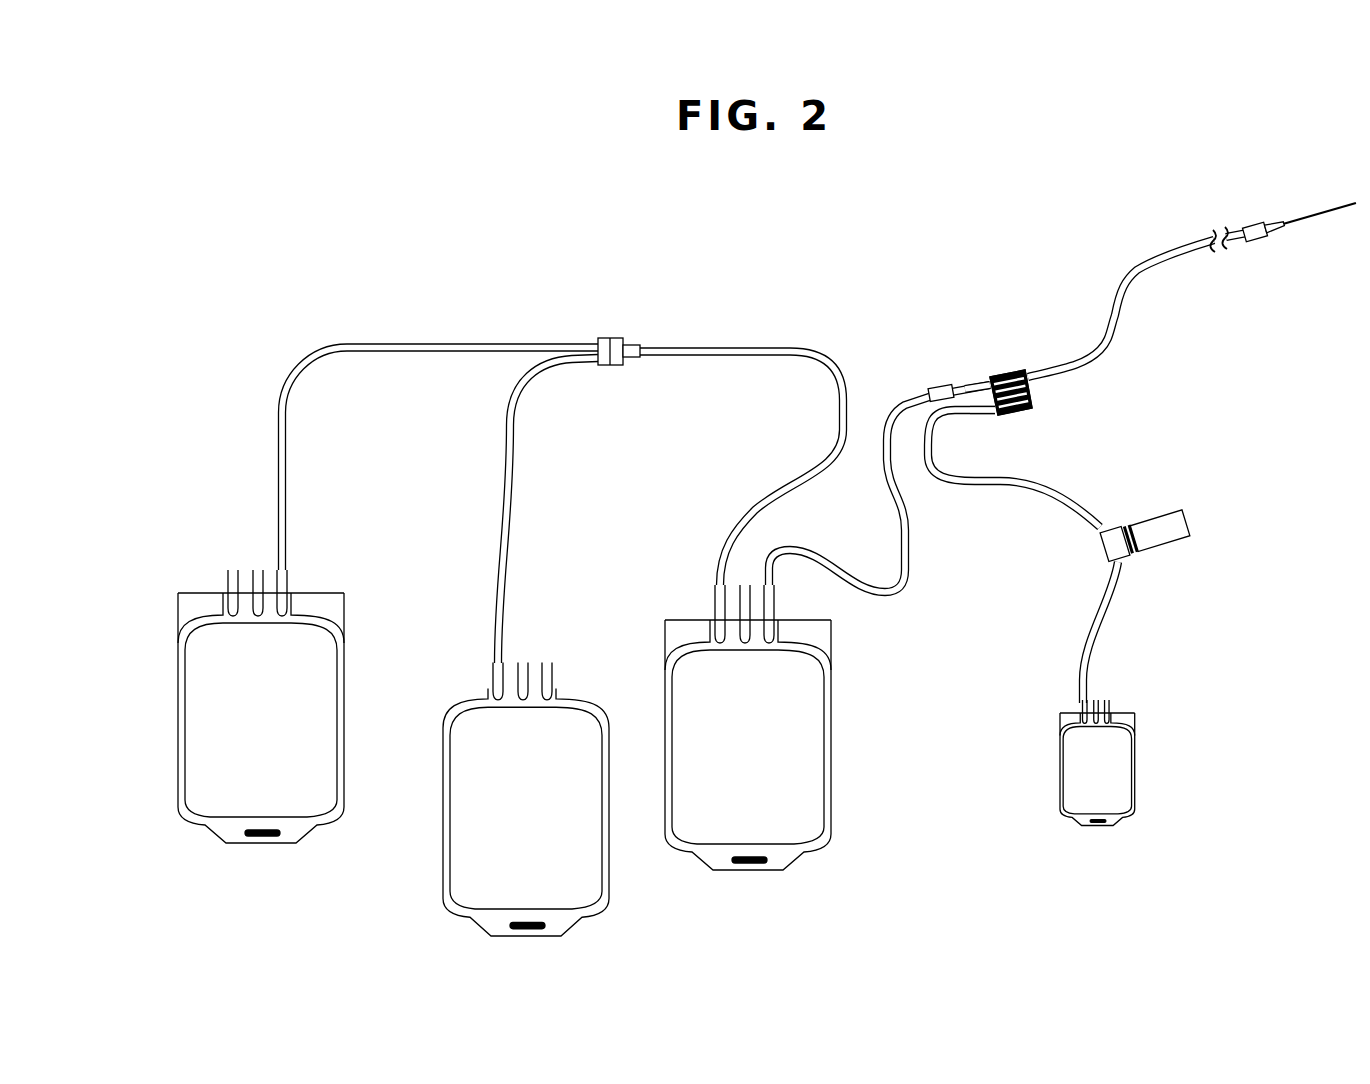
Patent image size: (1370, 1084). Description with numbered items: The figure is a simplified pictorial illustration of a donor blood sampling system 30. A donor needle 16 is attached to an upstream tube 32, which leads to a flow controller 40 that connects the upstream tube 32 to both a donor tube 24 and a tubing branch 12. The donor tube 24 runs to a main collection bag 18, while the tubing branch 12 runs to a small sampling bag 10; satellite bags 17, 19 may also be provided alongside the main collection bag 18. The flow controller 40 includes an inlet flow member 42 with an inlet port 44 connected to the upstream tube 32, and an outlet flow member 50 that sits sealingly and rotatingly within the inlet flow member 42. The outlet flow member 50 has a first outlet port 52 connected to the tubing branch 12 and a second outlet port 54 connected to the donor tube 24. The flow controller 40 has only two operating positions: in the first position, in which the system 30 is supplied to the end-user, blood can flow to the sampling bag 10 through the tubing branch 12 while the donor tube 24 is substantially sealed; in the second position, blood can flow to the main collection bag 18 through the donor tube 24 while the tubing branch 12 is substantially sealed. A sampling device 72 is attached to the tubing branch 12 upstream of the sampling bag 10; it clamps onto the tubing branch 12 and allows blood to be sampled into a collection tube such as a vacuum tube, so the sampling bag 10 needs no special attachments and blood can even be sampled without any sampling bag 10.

The sampling bag 10 is at (1072, 763).
The tubing branch 12 is at (1065, 505).
The donor needle 16 is at (1320, 212).
The satellite bag 17 is at (313, 805).
The main collection bag 18 is at (800, 833).
The satellite bag 19 is at (575, 898).
The donor tube 24 is at (905, 503).
The donor blood sampling system 30 is at (712, 312).
The upstream tube 32 is at (1136, 270).
The flow controller 40 is at (1012, 354).
The inlet flow member 42 is at (1030, 410).
The inlet port 44 is at (1035, 386).
The outlet flow member 50 is at (1000, 372).
The first outlet port 52 is at (987, 405).
The second outlet port 54 is at (987, 380).
The sampling device 72 is at (1100, 553).